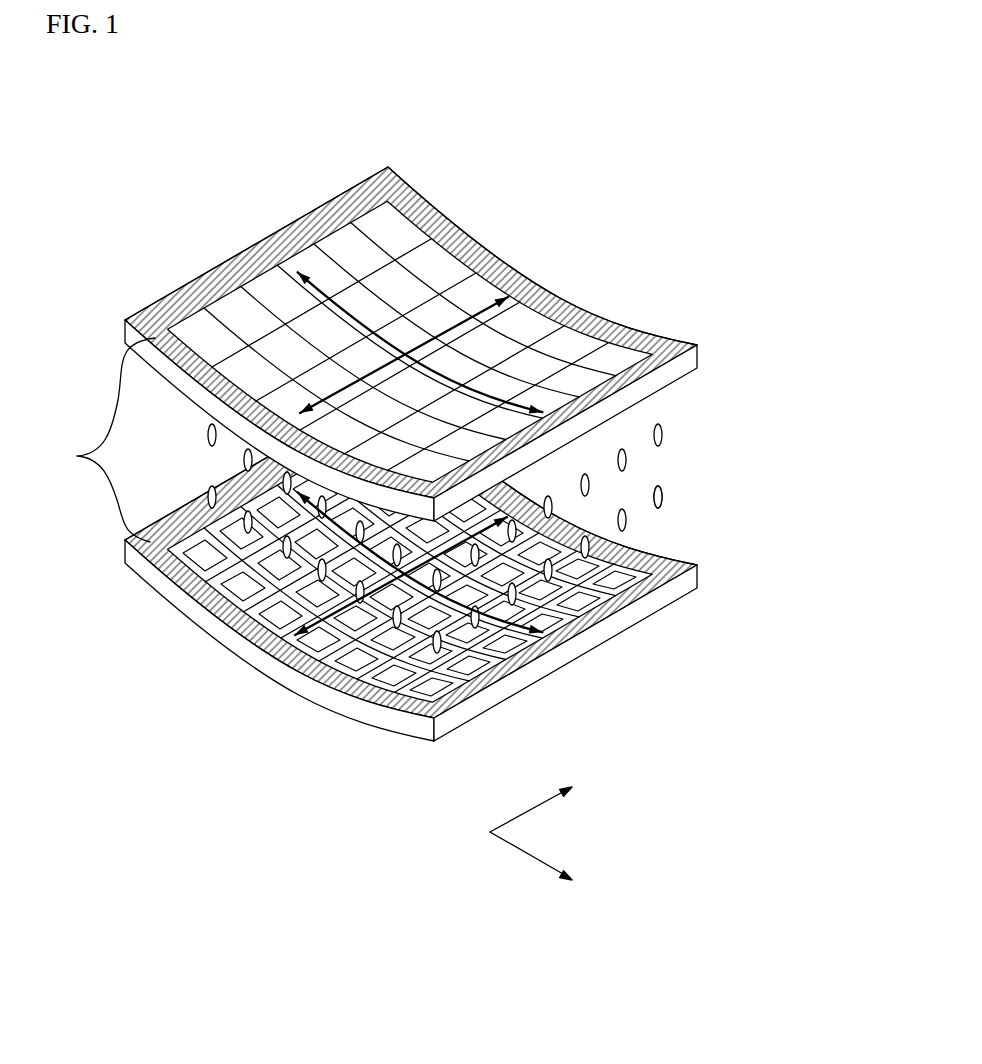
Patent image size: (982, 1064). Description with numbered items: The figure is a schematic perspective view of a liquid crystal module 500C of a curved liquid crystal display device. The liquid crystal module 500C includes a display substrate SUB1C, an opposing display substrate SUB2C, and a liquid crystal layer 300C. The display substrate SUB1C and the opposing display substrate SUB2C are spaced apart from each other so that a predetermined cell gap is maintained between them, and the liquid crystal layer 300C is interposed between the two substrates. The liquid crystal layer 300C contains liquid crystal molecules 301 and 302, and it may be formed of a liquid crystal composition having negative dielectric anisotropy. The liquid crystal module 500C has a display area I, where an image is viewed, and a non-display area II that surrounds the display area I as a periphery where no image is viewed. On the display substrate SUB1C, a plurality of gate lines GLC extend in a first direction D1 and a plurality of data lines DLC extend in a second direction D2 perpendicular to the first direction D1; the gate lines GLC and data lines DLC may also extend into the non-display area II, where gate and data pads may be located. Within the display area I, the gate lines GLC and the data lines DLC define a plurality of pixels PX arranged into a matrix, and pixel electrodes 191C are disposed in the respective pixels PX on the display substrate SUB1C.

The liquid crystal module 500C is at (621, 184).
The opposing display substrate SUB2C is at (666, 317).
The display substrate SUB1C is at (468, 591).
The liquid crystal layer 300C is at (493, 530).
The liquid crystal molecule 302 is at (628, 459).
The liquid crystal molecule 301 is at (664, 498).
The data line DLC is at (600, 570).
The gate line GLC is at (612, 585).
The pixel PX is at (545, 625).
The pixel electrode 191C is at (633, 583).
The non-display area II is at (105, 440).
The display area I is at (305, 285).
The first direction D1 is at (549, 866).
The second direction D2 is at (549, 799).